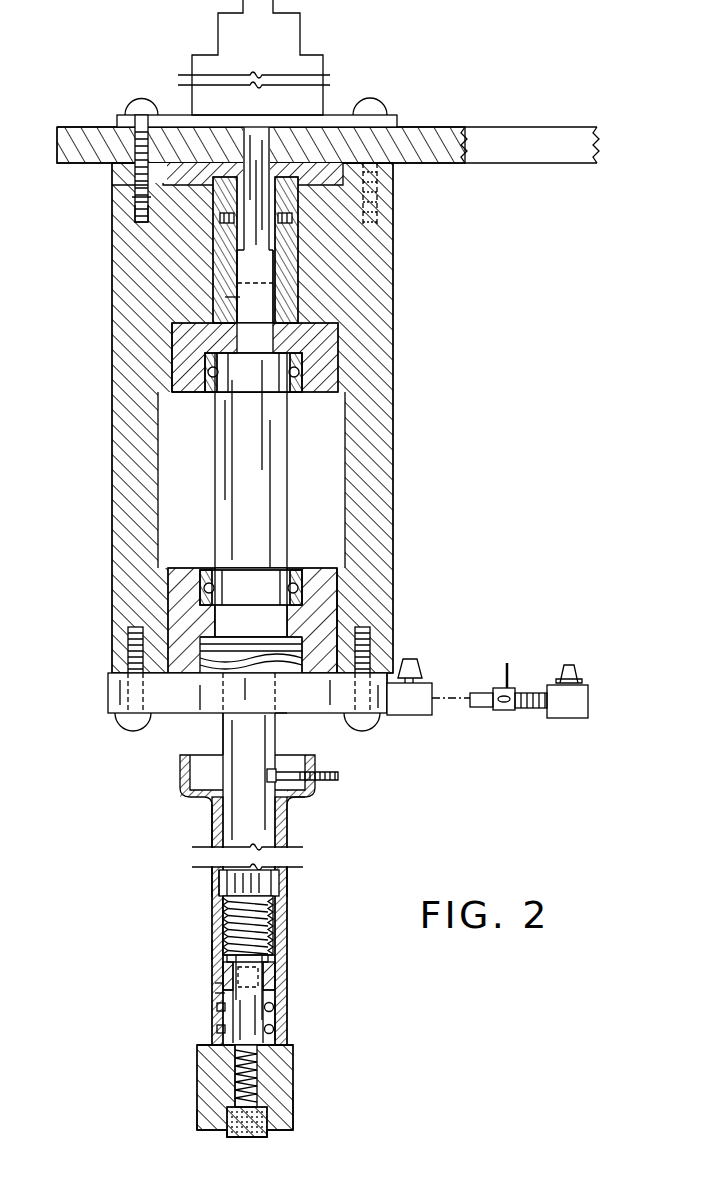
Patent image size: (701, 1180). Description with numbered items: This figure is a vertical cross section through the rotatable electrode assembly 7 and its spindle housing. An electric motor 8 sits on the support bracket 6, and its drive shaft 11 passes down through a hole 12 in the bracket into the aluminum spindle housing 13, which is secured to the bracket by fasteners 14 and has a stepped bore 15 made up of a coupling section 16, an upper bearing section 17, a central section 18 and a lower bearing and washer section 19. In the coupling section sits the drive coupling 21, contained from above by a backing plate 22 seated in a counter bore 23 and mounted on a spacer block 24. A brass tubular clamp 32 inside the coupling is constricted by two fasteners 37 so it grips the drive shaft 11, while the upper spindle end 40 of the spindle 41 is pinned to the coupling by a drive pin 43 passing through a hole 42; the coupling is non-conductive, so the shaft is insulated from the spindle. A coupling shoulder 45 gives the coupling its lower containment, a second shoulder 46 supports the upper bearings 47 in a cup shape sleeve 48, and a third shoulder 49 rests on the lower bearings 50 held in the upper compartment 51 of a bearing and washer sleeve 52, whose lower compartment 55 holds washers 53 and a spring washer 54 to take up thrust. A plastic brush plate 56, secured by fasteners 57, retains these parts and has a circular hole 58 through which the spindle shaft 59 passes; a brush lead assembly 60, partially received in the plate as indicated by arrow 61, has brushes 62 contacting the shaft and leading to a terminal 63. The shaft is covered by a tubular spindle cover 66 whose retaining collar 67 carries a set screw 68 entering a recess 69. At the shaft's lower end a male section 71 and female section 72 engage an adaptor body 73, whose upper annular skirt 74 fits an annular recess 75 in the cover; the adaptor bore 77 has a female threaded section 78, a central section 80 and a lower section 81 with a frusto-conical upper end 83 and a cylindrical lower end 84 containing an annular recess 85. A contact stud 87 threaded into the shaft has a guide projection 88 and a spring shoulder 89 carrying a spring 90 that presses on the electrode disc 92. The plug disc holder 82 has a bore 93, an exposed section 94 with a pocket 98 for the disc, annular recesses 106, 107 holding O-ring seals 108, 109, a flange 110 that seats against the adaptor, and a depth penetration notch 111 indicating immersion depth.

The support bracket 6 is at (570, 128).
The rotatable electrode assembly 7 is at (165, 835).
The electric motor 8 is at (310, 103).
The drive shaft 11 is at (257, 145).
The hole 12 is at (222, 142).
The spindle housing 13 is at (112, 445).
The fasteners 14 is at (140, 100).
The stepped bore 15 is at (158, 512).
The coupling section 16 is at (212, 253).
The upper bearing section 17 is at (172, 350).
The central section 18 is at (345, 512).
The lower bearing and washer section 19 is at (337, 585).
The drive coupling 21 is at (298, 247).
The backing plate 22 is at (150, 230).
The counter bore 23 is at (135, 196).
The spacer block 24 is at (395, 172).
The tubular clamp 32 is at (380, 213).
The fasteners 37 is at (325, 215).
The upper spindle end 40 is at (258, 305).
The spindle 41 is at (240, 493).
The hole 42 is at (225, 296).
The drive pin 43 is at (278, 268).
The coupling shoulder 45 is at (240, 360).
The second shoulder 46 is at (232, 385).
The upper bearings 47 is at (208, 392).
The cup shape sleeve 48 is at (330, 365).
The third shoulder 49 is at (220, 570).
The lower bearings 50 is at (170, 608).
The upper compartment 51 is at (305, 578).
The bearing and washer sleeve 52 is at (317, 600).
The washers 53 is at (136, 655).
The spring washer 54 is at (205, 700).
The lower compartment 55 is at (303, 700).
The plastic brush plate 56 is at (108, 692).
The fasteners 57 is at (385, 715).
The circular hole 58 is at (283, 705).
The spindle shaft 59 is at (222, 740).
The brush lead assembly 60 is at (510, 668).
The arrow 61 is at (435, 690).
The brushes 62 is at (482, 705).
The terminal 63 is at (409, 657).
The tubular spindle cover 66 is at (287, 833).
The retaining collar 67 is at (213, 800).
The set screw 68 is at (330, 783).
The recess 69 is at (287, 810).
The male section 71 is at (289, 910).
The female section 72 is at (287, 962).
The adaptor body 73 is at (285, 932).
The upper annular skirt 74 is at (210, 880).
The annular recess 75 is at (280, 880).
The bore 77 is at (215, 890).
The female threaded section 78 is at (275, 905).
The central section 80 is at (222, 922).
The lower section 81 is at (238, 1000).
The plug disc holder 82 is at (182, 1118).
The frusto-conical upper end 83 is at (213, 945).
The cylindrical lower end 84 is at (262, 982).
The annular recess 85 is at (277, 1013).
The contact stud 87 is at (218, 985).
The guide projection 88 is at (233, 1093).
The spring shoulder 89 is at (233, 1058).
The spring 90 is at (258, 1075).
The electrode disc 92 is at (247, 1137).
The bore 93 is at (217, 1010).
The exposed section 94 is at (217, 1130).
The pocket 98 is at (277, 1110).
The annular recess 106 is at (273, 1003).
The annular recess 107 is at (273, 1028).
The O-ring seal 108 is at (220, 993).
The O-ring seal 109 is at (217, 1030).
The flange 110 is at (293, 1050).
The depth penetration notch 111 is at (293, 1100).